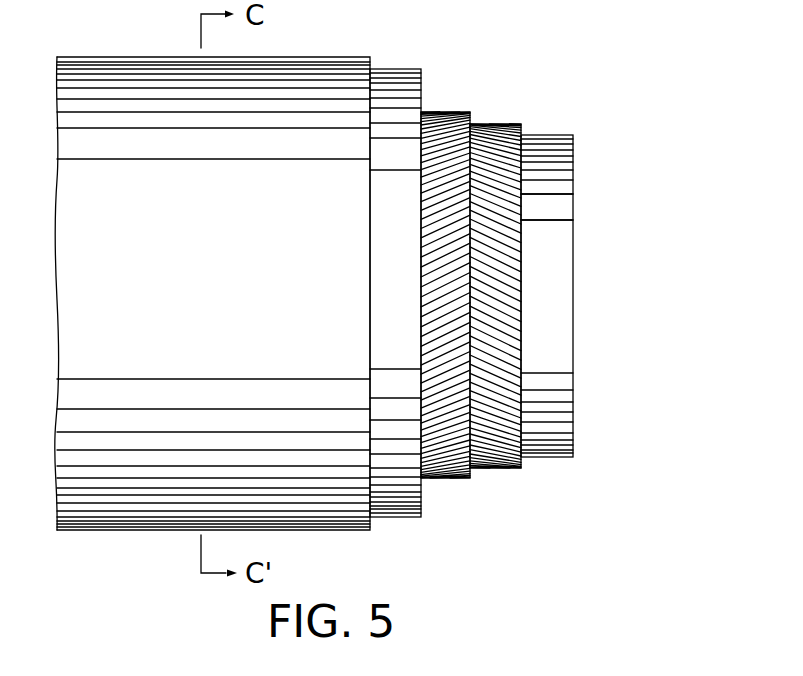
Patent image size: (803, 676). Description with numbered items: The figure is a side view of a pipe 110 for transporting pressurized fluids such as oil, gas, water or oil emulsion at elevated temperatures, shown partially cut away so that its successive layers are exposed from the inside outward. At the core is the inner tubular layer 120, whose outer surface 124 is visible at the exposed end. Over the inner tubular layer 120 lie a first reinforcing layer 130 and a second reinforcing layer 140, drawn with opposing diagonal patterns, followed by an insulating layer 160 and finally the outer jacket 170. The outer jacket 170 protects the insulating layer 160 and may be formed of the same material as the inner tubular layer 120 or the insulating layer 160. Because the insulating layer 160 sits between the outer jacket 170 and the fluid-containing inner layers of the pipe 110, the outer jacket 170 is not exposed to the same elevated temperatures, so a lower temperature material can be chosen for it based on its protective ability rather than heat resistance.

The pipe 110 is at (589, 49).
The inner tubular layer 120 is at (557, 457).
The outer surface 124 is at (558, 208).
The first reinforcing layer 130 is at (497, 468).
The second reinforcing layer 140 is at (445, 478).
The insulating layer 160 is at (398, 517).
The outer jacket 170 is at (302, 530).